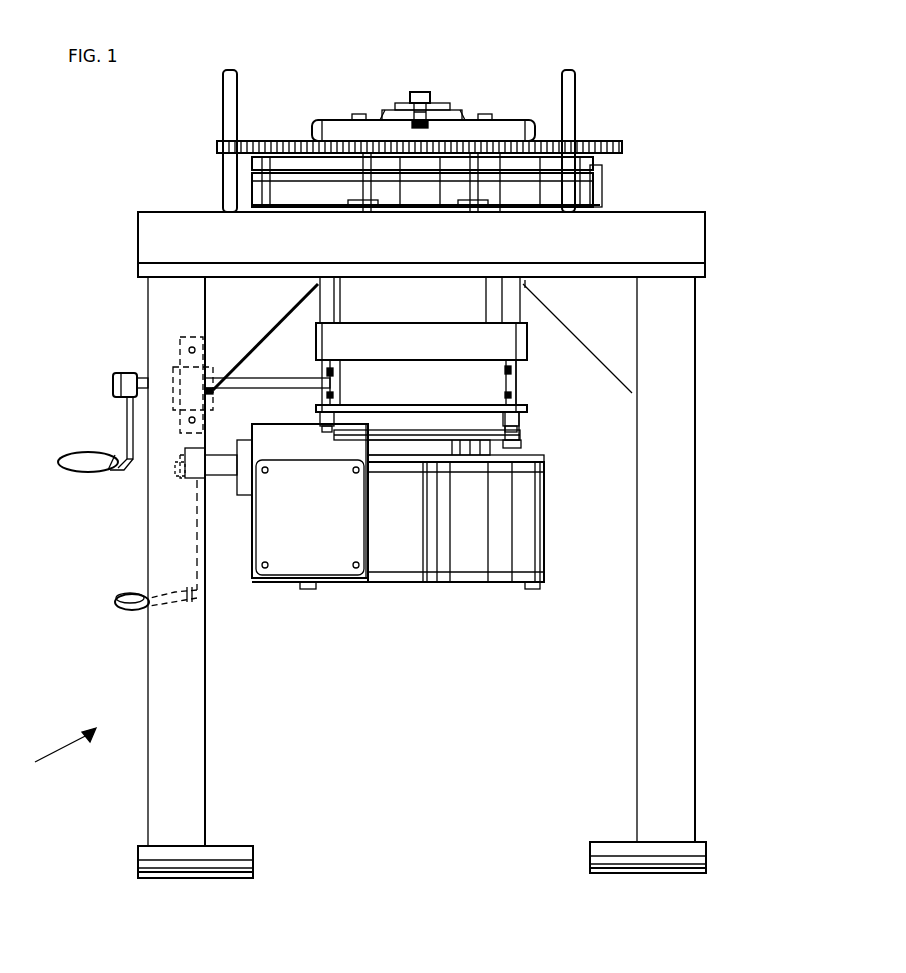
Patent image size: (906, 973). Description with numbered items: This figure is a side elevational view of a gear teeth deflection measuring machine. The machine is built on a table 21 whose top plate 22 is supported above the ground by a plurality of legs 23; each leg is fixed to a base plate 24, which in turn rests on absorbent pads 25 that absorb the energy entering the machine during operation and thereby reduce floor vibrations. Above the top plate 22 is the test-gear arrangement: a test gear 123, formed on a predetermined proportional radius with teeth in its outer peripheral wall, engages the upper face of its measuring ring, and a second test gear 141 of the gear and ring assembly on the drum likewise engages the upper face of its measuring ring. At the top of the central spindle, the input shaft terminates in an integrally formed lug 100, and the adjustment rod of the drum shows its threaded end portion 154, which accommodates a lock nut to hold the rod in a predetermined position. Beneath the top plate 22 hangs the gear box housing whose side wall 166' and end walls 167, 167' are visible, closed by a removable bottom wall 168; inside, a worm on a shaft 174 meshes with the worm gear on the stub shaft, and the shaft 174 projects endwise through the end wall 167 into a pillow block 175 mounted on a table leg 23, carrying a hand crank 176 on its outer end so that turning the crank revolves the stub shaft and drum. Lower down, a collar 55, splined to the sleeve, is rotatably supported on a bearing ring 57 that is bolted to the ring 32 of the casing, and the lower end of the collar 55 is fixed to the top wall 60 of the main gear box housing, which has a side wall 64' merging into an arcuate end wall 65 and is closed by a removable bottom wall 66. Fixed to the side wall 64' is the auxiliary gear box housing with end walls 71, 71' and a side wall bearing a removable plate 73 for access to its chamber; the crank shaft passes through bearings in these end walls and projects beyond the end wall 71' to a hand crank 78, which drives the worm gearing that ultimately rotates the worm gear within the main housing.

The table 21 is at (712, 312).
The top plate 22 is at (684, 232).
The legs 23 is at (157, 300).
The base plate 24 is at (240, 856).
The absorbent pads 25 is at (228, 868).
The ring 32 is at (518, 430).
The collar 55 is at (492, 456).
The bearing ring 57 is at (524, 438).
The top wall 60 is at (546, 466).
The side wall 64' is at (456, 522).
The arcuate end wall 65 is at (538, 520).
The removable bottom wall 66 is at (416, 580).
The end wall 71 is at (384, 501).
The end wall 71' is at (237, 509).
The removable plate 73 is at (314, 533).
The hand crank 78 is at (136, 592).
The lug 100 is at (422, 92).
The test gear 123 is at (600, 140).
The test gear 141 is at (493, 146).
The threaded end portion 154 is at (416, 108).
The side wall 166' is at (421, 344).
The end wall 167 is at (305, 375).
The end wall 167' is at (541, 381).
The removable bottom wall 168 is at (412, 412).
The shaft 174 is at (267, 398).
The pillow block 175 is at (215, 372).
The hand crank 176 is at (128, 418).